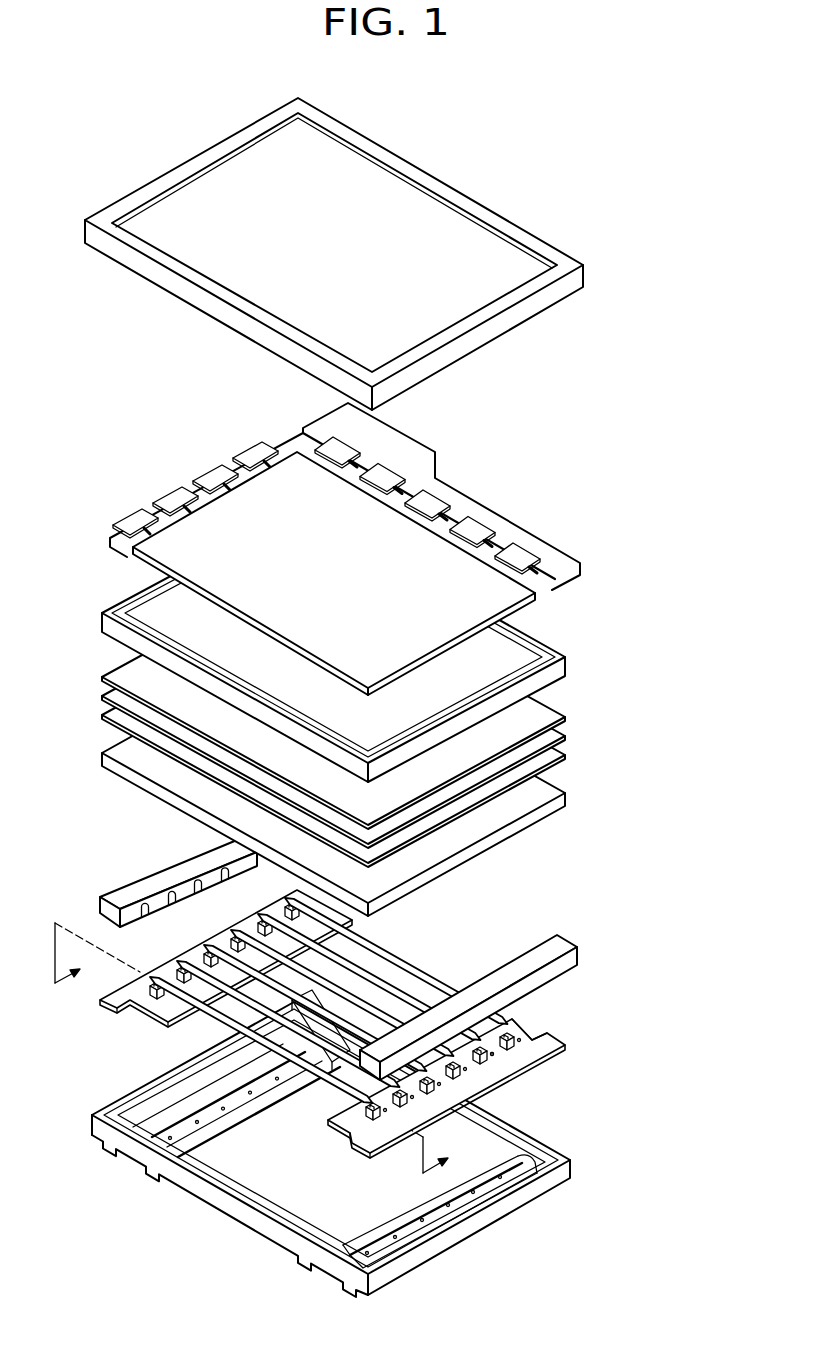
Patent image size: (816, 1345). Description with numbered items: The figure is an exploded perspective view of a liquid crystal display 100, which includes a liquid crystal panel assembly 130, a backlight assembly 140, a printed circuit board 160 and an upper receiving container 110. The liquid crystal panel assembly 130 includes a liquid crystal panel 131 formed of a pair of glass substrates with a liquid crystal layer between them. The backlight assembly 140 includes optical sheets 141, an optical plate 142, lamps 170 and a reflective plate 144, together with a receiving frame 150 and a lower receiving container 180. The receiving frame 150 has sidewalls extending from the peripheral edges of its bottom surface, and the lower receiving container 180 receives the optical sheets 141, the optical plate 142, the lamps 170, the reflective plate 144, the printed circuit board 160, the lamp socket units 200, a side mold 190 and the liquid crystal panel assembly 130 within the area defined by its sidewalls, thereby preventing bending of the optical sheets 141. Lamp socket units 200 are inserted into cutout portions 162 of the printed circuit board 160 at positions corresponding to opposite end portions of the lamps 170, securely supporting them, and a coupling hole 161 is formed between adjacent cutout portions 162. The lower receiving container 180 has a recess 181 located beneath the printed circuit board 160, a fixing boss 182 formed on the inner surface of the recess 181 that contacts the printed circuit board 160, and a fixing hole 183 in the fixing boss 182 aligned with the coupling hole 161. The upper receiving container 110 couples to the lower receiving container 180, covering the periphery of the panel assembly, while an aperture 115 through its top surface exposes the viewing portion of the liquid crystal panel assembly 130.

The liquid crystal display 100 is at (493, 178).
The upper receiving container 110 is at (569, 261).
The aperture 115 is at (243, 190).
The liquid crystal panel assembly 130 is at (522, 494).
The liquid crystal panel 131 is at (497, 593).
The backlight assembly 140 is at (652, 1188).
The optical sheets 141 is at (578, 717).
The optical plate 142 is at (567, 794).
The reflective plate 144 is at (297, 1187).
The receiving frame 150 is at (568, 666).
The printed circuit board 160 is at (558, 1037).
The coupling hole 161 is at (498, 1057).
The cutout portions 162 is at (467, 1076).
The lamps 170 is at (409, 961).
The lower receiving container 180 is at (359, 1145).
The recess 181 is at (128, 1163).
The fixing boss 182 is at (193, 1143).
The fixing hole 183 is at (198, 1126).
The side mold 190 is at (532, 953).
The lamp socket units 200 is at (512, 1028).